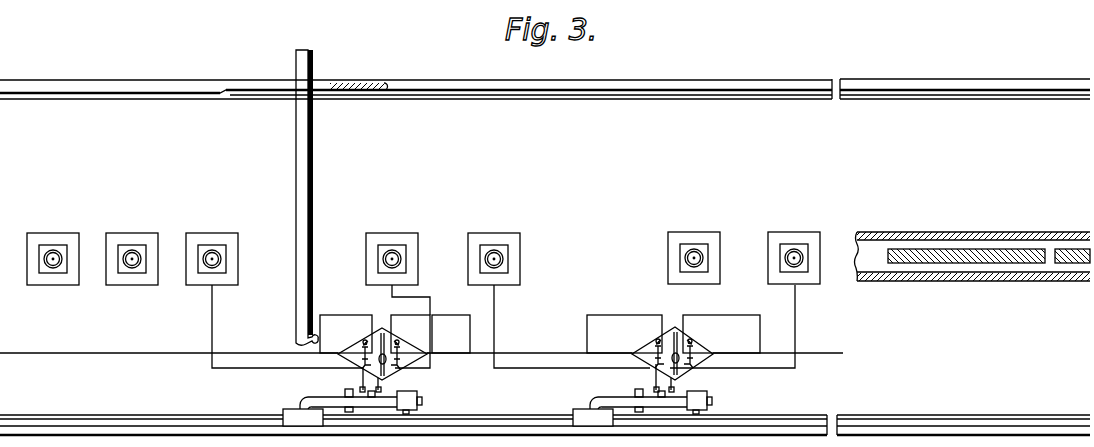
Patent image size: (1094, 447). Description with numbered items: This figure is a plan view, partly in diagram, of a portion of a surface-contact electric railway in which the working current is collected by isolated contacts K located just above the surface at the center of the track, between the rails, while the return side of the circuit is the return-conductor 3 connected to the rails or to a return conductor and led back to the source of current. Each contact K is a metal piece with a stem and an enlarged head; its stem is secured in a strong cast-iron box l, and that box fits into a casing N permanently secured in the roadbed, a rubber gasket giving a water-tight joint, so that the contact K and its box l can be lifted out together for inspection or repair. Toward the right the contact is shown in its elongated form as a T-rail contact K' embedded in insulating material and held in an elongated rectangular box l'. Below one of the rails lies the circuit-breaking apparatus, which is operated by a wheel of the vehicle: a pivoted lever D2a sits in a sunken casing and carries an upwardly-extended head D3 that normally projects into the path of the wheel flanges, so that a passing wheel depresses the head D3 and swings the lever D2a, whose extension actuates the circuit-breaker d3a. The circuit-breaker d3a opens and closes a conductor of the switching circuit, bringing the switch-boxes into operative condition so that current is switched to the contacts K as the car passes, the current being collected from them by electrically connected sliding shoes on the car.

The casing N is at (123, 236).
The box l is at (142, 246).
The contact K is at (336, 259).
The elongated contact K' is at (989, 235).
The elongated box l' is at (973, 268).
The return-conductor 3 is at (421, 344).
The head D3 is at (582, 410).
The pivoted lever D2a is at (611, 400).
The circuit-breaker d3a is at (672, 390).